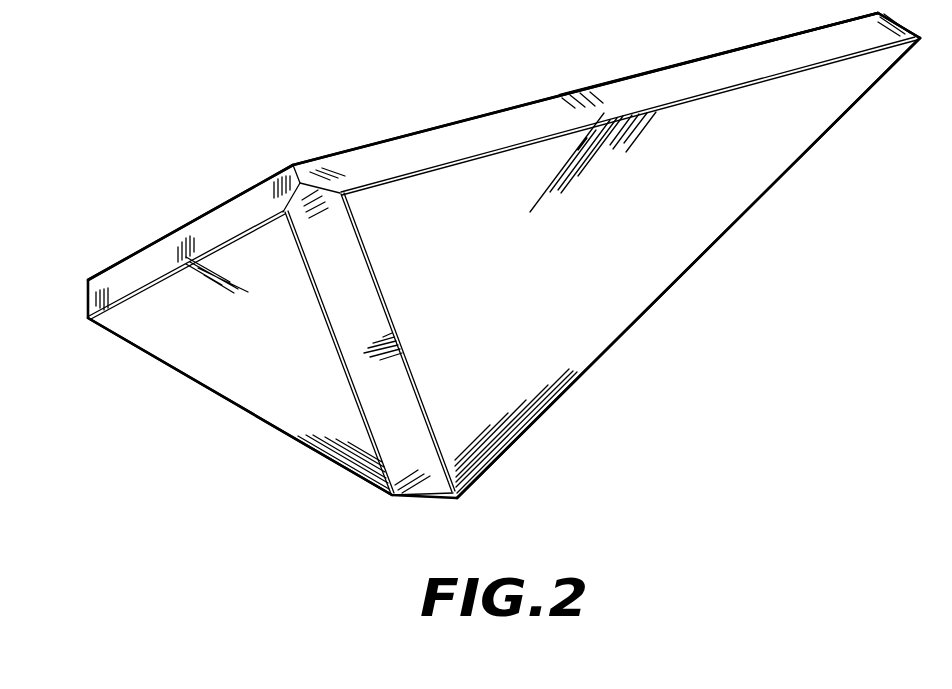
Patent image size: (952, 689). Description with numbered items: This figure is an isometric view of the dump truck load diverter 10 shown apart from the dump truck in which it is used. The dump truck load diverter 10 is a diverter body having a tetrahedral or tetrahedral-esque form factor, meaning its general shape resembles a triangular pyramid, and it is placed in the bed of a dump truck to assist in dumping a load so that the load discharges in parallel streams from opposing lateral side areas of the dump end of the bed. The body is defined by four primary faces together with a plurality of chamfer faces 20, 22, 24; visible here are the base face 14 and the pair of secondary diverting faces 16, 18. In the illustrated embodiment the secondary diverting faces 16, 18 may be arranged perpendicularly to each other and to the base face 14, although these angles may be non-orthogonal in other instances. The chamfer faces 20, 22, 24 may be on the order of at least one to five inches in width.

The dump truck load diverter 10 is at (270, 101).
The base face 14 is at (262, 361).
The secondary diverting face 16 is at (621, 246).
The secondary diverting face 18 is at (517, 103).
The chamfer face 20 is at (697, 74).
The chamfer face 22 is at (242, 216).
The chamfer face 24 is at (356, 288).